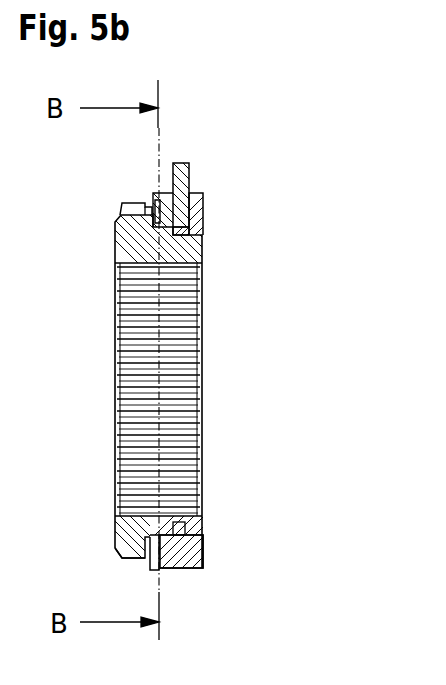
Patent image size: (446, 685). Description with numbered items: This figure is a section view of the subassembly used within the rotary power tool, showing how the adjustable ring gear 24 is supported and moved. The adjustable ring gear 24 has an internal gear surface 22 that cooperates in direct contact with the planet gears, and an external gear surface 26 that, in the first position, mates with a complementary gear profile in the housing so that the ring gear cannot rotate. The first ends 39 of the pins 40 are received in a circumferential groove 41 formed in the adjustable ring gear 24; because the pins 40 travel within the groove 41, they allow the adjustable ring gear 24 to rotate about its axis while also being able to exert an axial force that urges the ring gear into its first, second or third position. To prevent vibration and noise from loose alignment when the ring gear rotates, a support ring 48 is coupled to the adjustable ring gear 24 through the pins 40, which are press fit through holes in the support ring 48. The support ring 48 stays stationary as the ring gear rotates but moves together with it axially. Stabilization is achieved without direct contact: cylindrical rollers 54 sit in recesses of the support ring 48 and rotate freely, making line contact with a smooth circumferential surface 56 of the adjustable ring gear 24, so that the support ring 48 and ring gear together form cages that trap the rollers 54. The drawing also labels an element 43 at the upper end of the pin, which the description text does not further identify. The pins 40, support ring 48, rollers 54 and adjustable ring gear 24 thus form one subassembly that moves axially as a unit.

The internal gear surface 22 is at (190, 298).
The adjustable ring gear 24 is at (121, 228).
The external gear surface 26 is at (136, 208).
The first ends 39 is at (200, 228).
The pins 40 is at (190, 183).
The circumferential groove 41 is at (185, 528).
The pin 43 is at (189, 167).
The support ring 48 is at (197, 214).
The rollers 54 is at (170, 545).
The smooth circumferential surface 56 is at (124, 528).